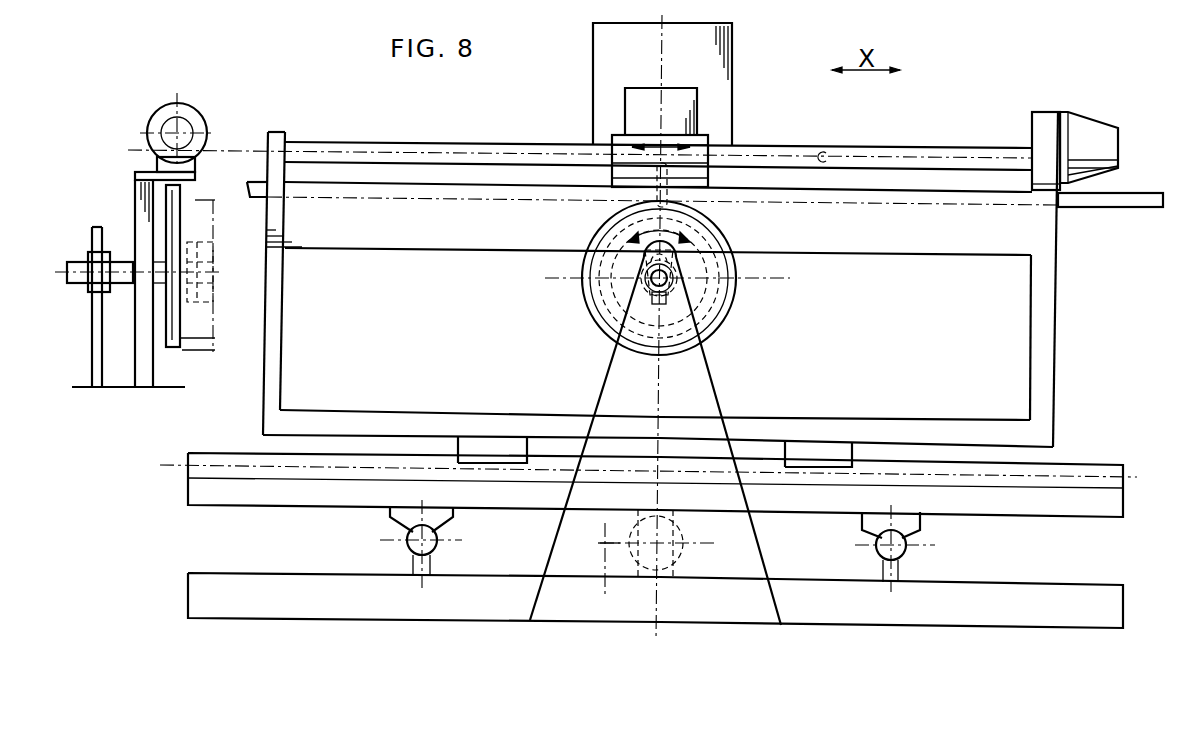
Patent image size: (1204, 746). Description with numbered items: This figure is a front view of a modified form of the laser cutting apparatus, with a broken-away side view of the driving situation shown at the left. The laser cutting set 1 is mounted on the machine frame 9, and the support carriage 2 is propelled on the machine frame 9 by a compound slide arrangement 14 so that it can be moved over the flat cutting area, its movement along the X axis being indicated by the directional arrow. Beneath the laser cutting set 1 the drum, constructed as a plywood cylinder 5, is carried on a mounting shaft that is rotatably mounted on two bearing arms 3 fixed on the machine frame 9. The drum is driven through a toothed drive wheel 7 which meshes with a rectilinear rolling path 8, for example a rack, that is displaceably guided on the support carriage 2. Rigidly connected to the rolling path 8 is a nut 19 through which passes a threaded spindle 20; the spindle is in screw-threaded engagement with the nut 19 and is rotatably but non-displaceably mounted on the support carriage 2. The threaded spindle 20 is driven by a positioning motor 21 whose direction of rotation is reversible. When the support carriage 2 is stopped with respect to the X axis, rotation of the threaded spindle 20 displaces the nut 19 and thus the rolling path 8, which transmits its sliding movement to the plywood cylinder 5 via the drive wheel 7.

The laser cutting set 1 is at (685, 110).
The support carriage 2 is at (1049, 351).
The bearing arm 3 is at (707, 384).
The plywood cylinder 5 is at (715, 305).
The drive wheel 7 is at (725, 325).
The rolling path 8 is at (1105, 199).
The machine frame 9 is at (708, 58).
The compound slide arrangement 14 is at (1107, 460).
The nut 19 is at (620, 143).
The threaded spindle 20 is at (869, 155).
The positioning motor 21 is at (1088, 130).